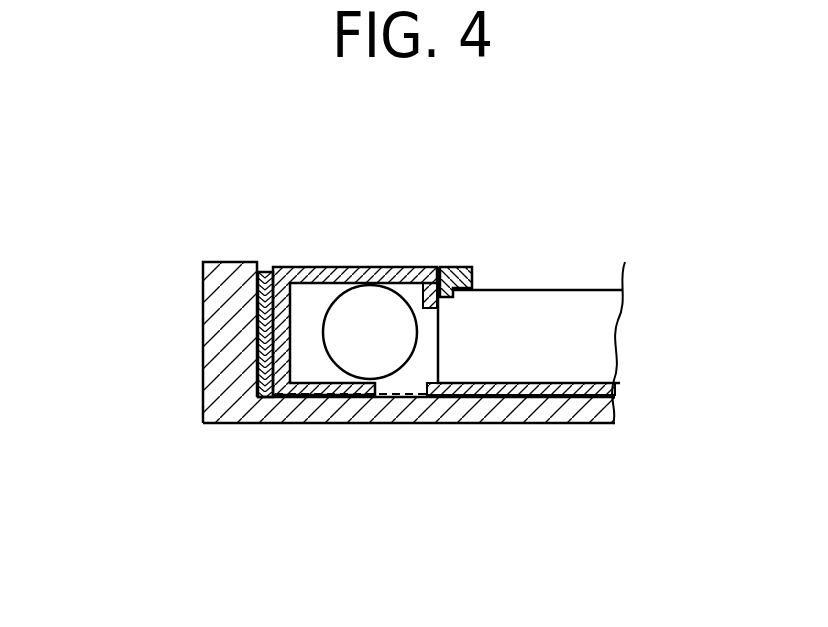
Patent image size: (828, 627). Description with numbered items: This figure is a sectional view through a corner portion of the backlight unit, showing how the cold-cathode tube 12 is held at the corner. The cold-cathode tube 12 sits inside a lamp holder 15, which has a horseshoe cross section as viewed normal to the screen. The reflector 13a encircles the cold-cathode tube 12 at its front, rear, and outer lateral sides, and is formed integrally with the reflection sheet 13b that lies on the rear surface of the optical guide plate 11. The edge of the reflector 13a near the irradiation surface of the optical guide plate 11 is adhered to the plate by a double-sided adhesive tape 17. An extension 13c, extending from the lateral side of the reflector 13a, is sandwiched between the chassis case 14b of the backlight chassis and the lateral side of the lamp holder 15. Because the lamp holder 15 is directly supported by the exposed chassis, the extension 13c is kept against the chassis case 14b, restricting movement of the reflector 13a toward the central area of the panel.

The optical guide plate 11 is at (567, 322).
The cold-cathode tube 12 is at (340, 366).
The reflector 13a is at (462, 267).
The reflection sheet 13b is at (490, 422).
The extension 13c is at (257, 333).
The chassis case 14b is at (212, 287).
The lamp holder 15 is at (333, 267).
The double-sided adhesive tape 17 is at (453, 291).